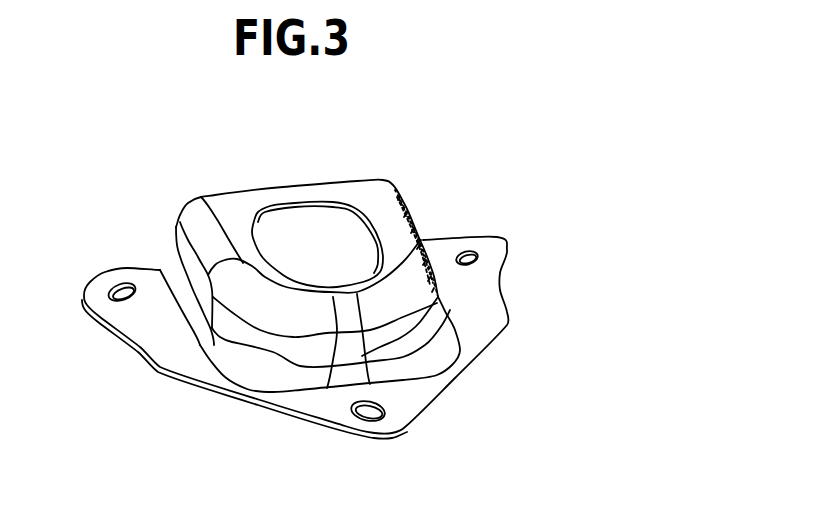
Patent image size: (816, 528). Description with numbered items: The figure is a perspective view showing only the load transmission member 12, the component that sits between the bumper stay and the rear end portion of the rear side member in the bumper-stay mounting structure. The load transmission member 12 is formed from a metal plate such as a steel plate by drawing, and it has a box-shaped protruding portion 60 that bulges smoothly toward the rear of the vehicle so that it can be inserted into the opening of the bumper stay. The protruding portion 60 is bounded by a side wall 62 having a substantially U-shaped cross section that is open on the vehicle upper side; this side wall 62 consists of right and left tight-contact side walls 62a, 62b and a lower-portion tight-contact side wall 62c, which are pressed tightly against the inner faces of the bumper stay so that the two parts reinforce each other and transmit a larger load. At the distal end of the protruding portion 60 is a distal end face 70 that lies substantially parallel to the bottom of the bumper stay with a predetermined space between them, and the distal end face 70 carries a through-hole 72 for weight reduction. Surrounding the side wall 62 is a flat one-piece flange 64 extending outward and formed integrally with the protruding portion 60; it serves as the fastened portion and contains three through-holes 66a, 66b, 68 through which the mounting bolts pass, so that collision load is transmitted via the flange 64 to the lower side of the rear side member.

The load transmission member 12 is at (413, 130).
The protruding portion 60 is at (226, 178).
The side wall 62 is at (398, 344).
The tight-contact side wall 62a is at (187, 258).
The tight-contact side wall 62b is at (417, 237).
The lower-portion tight-contact side wall 62c is at (337, 350).
The flange 64 is at (172, 345).
The through-hole 66a is at (84, 305).
The through-hole 66b is at (497, 237).
The through-hole 68 is at (384, 412).
The distal end face 70 is at (358, 197).
The through-hole 72 is at (257, 238).